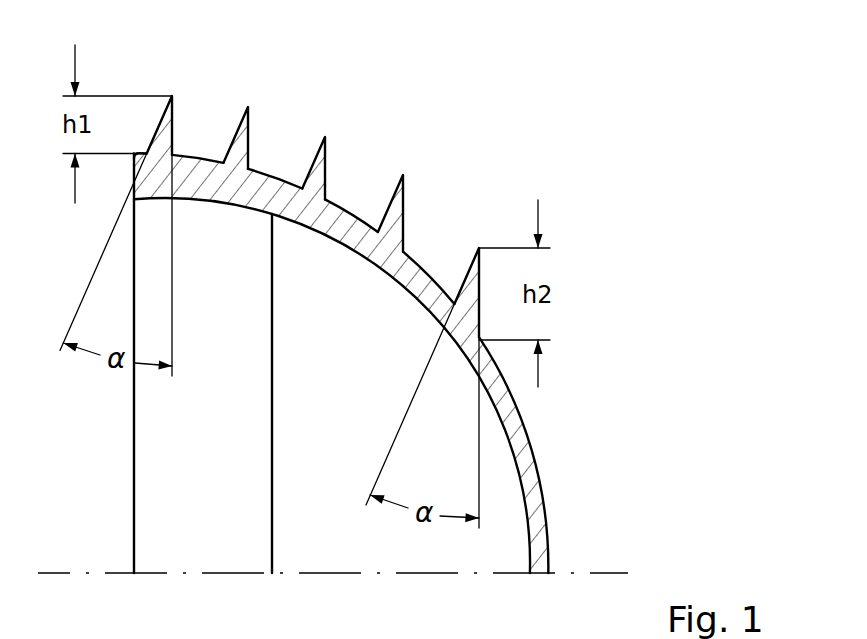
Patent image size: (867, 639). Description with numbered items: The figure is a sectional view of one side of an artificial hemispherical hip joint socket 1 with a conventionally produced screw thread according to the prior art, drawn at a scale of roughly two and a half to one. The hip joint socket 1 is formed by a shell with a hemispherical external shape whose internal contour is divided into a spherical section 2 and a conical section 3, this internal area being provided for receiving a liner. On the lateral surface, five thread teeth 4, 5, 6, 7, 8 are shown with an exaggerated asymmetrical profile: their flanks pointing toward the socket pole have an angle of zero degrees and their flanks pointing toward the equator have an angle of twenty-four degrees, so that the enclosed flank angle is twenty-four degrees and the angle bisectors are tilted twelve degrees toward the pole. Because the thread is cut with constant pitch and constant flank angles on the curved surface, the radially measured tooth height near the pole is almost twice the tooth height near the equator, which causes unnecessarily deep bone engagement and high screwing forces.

The hip joint socket 1 is at (521, 461).
The spherical section 2 is at (312, 393).
The conical section 3 is at (174, 364).
The thread tooth 4 is at (172, 96).
The thread tooth 5 is at (248, 107).
The thread tooth 6 is at (325, 137).
The thread tooth 7 is at (403, 175).
The thread tooth 8 is at (479, 248).